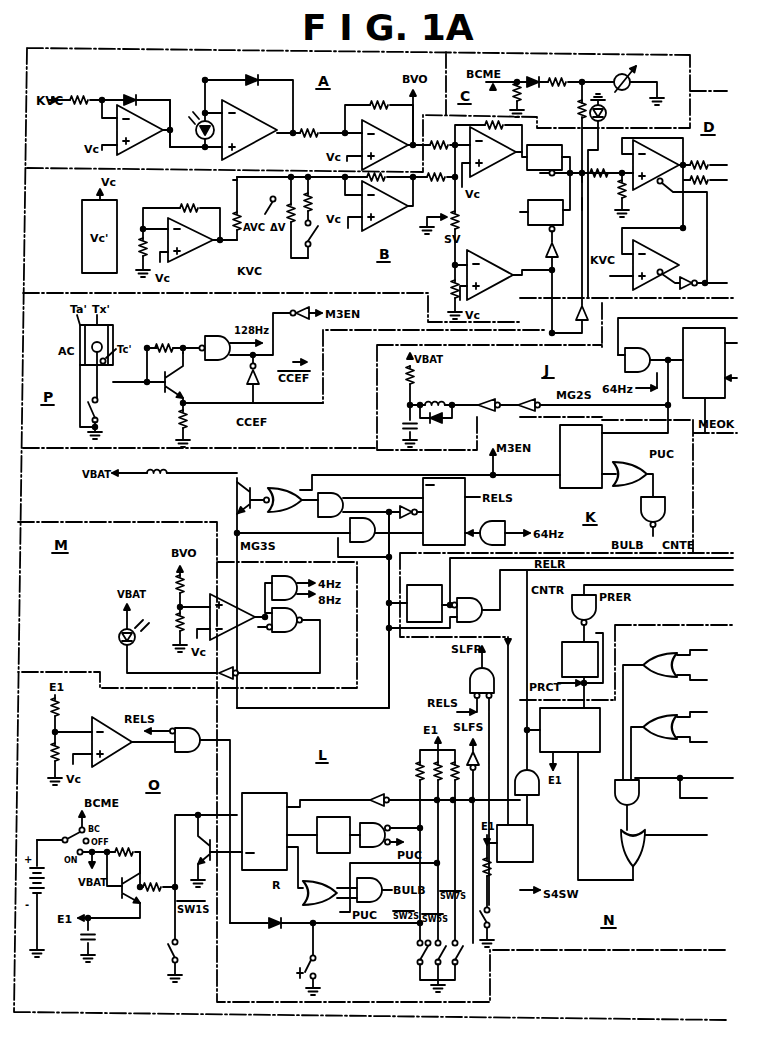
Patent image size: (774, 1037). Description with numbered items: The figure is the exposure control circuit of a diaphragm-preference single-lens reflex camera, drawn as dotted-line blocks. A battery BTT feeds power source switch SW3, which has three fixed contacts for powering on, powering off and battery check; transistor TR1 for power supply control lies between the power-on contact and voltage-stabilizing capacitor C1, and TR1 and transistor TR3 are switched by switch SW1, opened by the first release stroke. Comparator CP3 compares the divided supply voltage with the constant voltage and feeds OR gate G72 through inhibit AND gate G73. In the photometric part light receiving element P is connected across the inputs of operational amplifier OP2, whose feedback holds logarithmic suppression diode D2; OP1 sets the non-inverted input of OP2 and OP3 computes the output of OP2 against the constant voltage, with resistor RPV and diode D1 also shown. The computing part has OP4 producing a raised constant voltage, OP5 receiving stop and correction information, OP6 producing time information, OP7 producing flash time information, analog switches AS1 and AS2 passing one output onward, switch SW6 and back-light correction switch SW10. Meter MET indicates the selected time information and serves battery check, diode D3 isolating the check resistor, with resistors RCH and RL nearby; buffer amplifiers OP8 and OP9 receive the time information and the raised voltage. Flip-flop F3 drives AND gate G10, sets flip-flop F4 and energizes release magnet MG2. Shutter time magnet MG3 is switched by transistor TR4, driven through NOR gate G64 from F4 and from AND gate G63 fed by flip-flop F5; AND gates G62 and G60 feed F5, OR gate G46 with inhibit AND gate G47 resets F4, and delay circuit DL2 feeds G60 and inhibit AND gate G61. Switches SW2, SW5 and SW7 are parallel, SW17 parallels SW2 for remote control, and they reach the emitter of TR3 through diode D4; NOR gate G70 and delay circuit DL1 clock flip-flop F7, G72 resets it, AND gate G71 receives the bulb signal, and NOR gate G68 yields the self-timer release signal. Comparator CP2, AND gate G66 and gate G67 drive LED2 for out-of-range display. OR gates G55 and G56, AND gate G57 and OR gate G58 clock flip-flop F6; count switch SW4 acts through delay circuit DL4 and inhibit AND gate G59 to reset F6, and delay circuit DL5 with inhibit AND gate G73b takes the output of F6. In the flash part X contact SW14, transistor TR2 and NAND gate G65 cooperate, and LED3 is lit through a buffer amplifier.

The operational amplifier OP1 is at (140, 130).
The operational amplifier OP2 is at (249, 130).
The operational amplifier OP3 is at (385, 145).
The operational amplifier OP4 is at (190, 240).
The operational amplifier OP5 is at (385, 206).
The operational amplifier OP6 is at (493, 152).
The operational amplifier OP7 is at (490, 275).
The buffer amplifier OP8 is at (656, 165).
The buffer amplifier OP9 is at (656, 265).
The comparator CP2 is at (232, 617).
The comparator CP3 is at (112, 742).
The AND gate G10 is at (637, 360).
The OR gate G46 is at (630, 474).
The AND gate G47 is at (653, 509).
The OR gate G55 is at (660, 665).
The OR gate G56 is at (660, 727).
The AND gate G57 is at (627, 792).
The OR gate G58 is at (633, 848).
The inhibit AND gate G59 is at (527, 782).
The AND gate G60 is at (492, 533).
The inhibit AND gate G61 is at (469, 610).
The AND gate G62 is at (362, 530).
The AND gate G63 is at (330, 505).
The NOR gate G64 is at (283, 500).
The NAND gate G65 is at (214, 348).
The AND gate G66 is at (284, 588).
The gate G67 is at (284, 620).
The NOR gate G68 is at (482, 683).
The NOR gate G70 is at (375, 835).
The AND gate G71 is at (369, 890).
The OR gate G72 is at (320, 893).
The inhibit AND gate G73 is at (185, 740).
The inhibit AND gate G73b is at (584, 610).
The flip-flop F3 is at (704, 363).
The flip-flop F4 is at (581, 456).
The flip-flop F5 is at (444, 511).
The flip-flop F6 is at (570, 730).
The flip-flop F7 is at (264, 831).
The delay circuit DL1 is at (333, 835).
The delay circuit DL2 is at (424, 603).
The delay circuit DL4 is at (515, 843).
The delay circuit DL5 is at (580, 659).
The analog switch AS1 is at (544, 157).
The analog switch AS2 is at (545, 212).
The transistor for power supply control TR1 is at (137, 891).
The transistor TR2 is at (187, 378).
The transistor TR3 is at (193, 847).
The switching transistor TR4 is at (242, 498).
The switch SW1 is at (188, 934).
The switch SW2 is at (409, 952).
The power source switch SW3 is at (69, 839).
The count switch SW4 is at (500, 891).
The switch SW5 is at (454, 969).
The switch SW6 is at (259, 217).
The switch SW7 is at (468, 956).
The switch SW10 is at (327, 217).
The X contact SW14 is at (110, 418).
The switch SW17 is at (329, 975).
The diode D1 is at (133, 88).
The logarithmic suppression diode D2 is at (254, 73).
The diode D3 is at (535, 75).
The diode D4 is at (275, 934).
The capacitor C1 is at (97, 940).
The power source battery BTT is at (49, 895).
The light emitting diode LED2 is at (111, 637).
The light emitting diode LED3 is at (615, 115).
The meter MET is at (639, 78).
The light receiving element P is at (198, 125).
The electromagnetic releasing magnet MG2 is at (438, 403).
The shutter time control magnet MG3 is at (161, 464).
The resistor RL is at (525, 95).
The resistor RCH is at (559, 75).
The resistor RPV is at (78, 93).